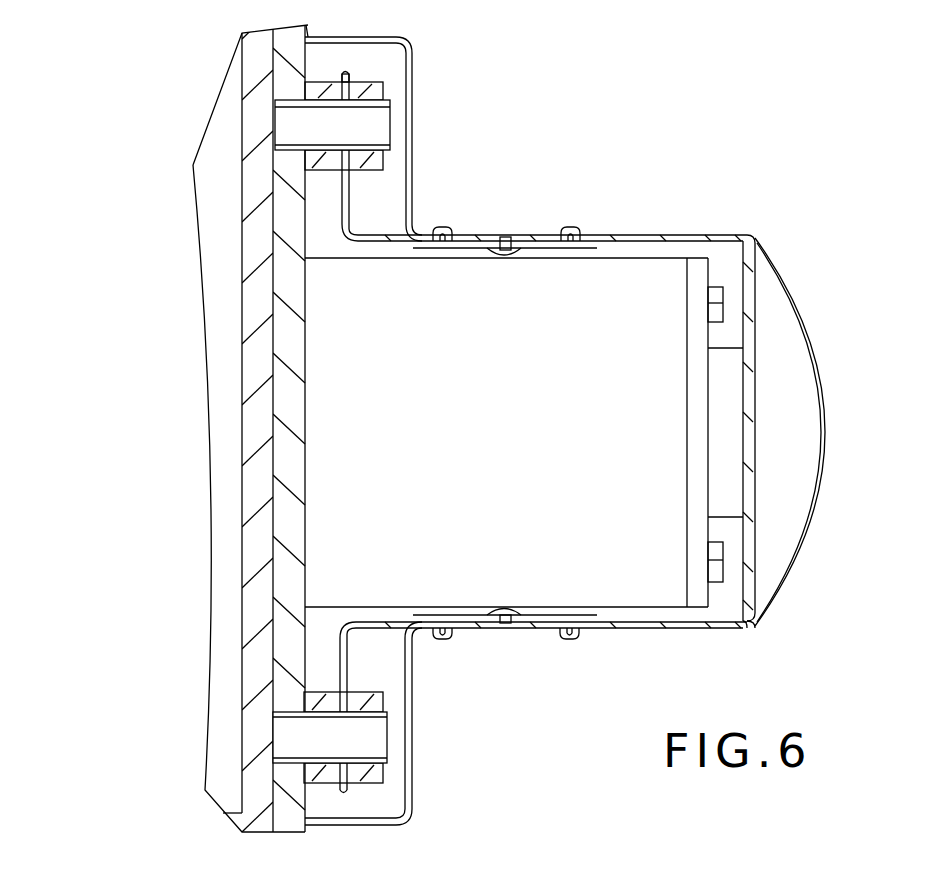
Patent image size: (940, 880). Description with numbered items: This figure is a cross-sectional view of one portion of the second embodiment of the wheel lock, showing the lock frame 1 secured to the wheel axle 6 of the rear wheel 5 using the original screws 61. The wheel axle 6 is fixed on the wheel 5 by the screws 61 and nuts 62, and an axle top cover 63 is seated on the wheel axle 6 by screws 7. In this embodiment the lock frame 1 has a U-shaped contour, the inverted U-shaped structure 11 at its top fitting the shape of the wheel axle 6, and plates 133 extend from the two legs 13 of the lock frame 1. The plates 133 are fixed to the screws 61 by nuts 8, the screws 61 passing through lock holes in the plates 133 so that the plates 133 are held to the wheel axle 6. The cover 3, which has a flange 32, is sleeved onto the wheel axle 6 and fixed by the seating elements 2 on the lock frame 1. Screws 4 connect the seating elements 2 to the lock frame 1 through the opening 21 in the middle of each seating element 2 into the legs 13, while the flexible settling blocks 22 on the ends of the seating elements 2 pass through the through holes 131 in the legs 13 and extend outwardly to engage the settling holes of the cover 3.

The lock frame 1 is at (757, 237).
The seating elements 2 is at (548, 235).
The cover 3 is at (795, 290).
The screws 4 is at (505, 237).
The rear wheel 5 is at (280, 65).
The wheel axle 6 is at (668, 502).
The screws 7 is at (720, 297).
The nuts 8 is at (375, 93).
The inverted U-shaped structure 11 is at (748, 368).
The legs 13 is at (655, 238).
The opening 21 is at (495, 237).
The settling blocks 22 is at (442, 228).
The flange 32 is at (410, 760).
The screws 61 is at (374, 128).
The nuts 62 is at (322, 88).
The axle top cover 63 is at (727, 452).
The through holes 131 is at (588, 236).
The plates 133 is at (343, 663).